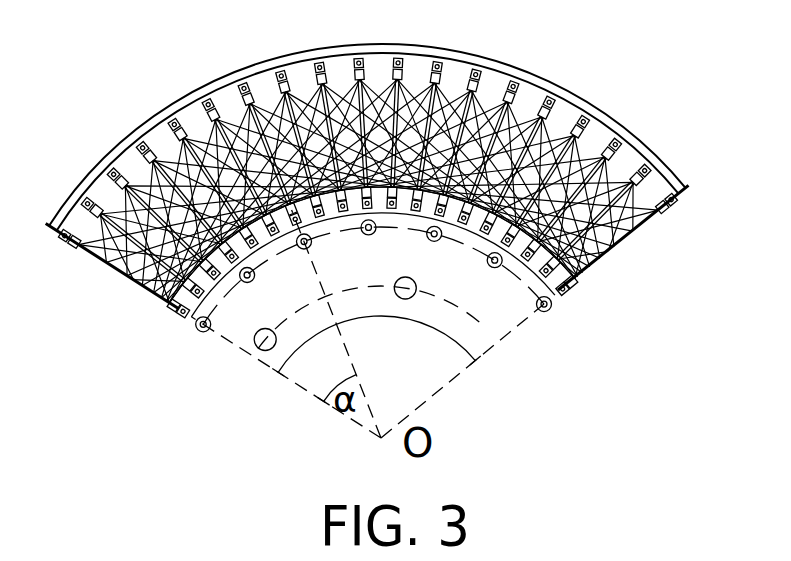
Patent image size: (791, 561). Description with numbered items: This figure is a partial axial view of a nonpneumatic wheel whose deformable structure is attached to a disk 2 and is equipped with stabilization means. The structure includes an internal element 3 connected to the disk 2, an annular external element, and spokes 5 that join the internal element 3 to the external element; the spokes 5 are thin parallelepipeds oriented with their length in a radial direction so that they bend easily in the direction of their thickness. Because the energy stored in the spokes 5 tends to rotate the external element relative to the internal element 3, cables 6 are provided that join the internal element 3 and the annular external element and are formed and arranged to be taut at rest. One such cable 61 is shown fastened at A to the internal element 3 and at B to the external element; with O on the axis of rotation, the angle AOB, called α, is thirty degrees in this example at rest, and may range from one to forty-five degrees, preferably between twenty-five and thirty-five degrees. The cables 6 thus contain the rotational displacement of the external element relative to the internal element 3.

The disk 2 is at (432, 376).
The internal element 3 is at (560, 289).
The spokes 5 is at (633, 195).
The cables 6 is at (600, 158).
The cable 61 is at (212, 126).
The fastening point A is at (188, 313).
The fastening point B is at (248, 86).